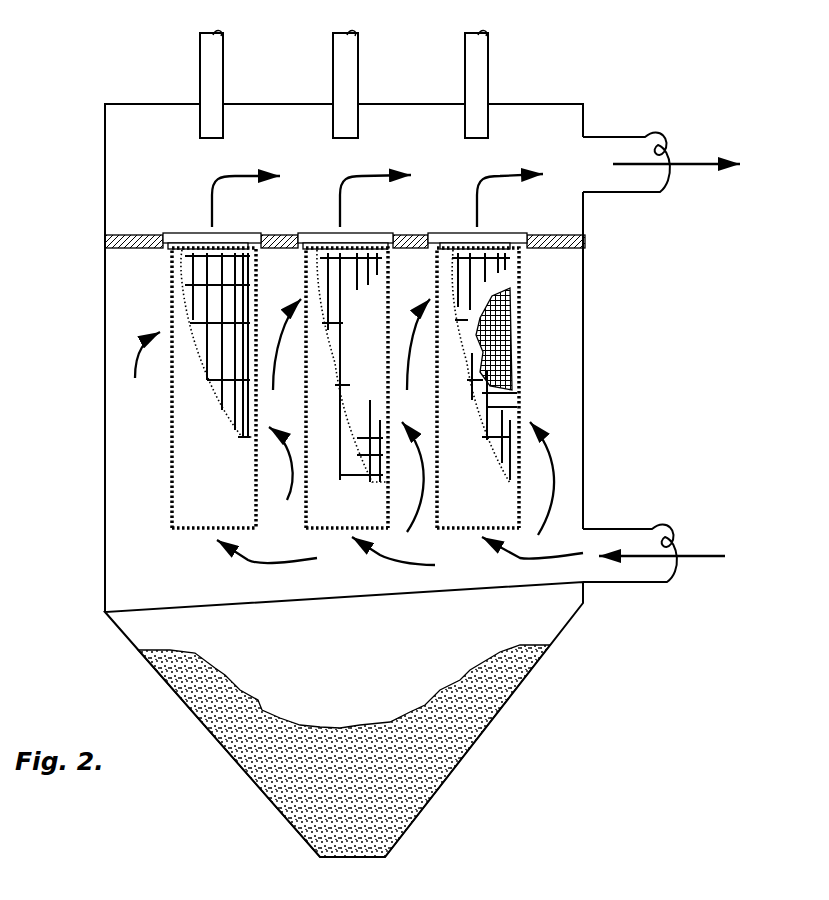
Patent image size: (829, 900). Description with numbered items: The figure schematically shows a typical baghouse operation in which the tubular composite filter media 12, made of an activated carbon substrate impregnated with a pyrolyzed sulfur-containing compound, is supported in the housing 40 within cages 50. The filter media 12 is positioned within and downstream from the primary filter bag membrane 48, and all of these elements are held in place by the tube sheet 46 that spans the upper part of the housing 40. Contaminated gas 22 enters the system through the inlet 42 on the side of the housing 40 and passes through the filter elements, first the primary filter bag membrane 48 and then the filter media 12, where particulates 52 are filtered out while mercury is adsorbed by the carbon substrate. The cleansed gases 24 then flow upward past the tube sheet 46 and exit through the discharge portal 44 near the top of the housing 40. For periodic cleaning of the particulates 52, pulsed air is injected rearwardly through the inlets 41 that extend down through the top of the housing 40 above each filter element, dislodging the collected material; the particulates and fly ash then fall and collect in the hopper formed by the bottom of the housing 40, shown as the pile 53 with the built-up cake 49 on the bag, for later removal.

The tubular composite filter media 12 is at (215, 310).
The contaminated gas 22 is at (272, 588).
The cleansed gases 24 is at (355, 180).
The housing 40 is at (115, 618).
The inlets 41 is at (213, 77).
The inlet 42 is at (632, 538).
The discharge portal 44 is at (618, 145).
The tube sheet 46 is at (134, 233).
The primary filter bag membrane 48 is at (215, 438).
The dust cake 49 is at (510, 330).
The cages 50 is at (183, 283).
The particulates 52 is at (172, 520).
The collected dust 53 is at (343, 727).